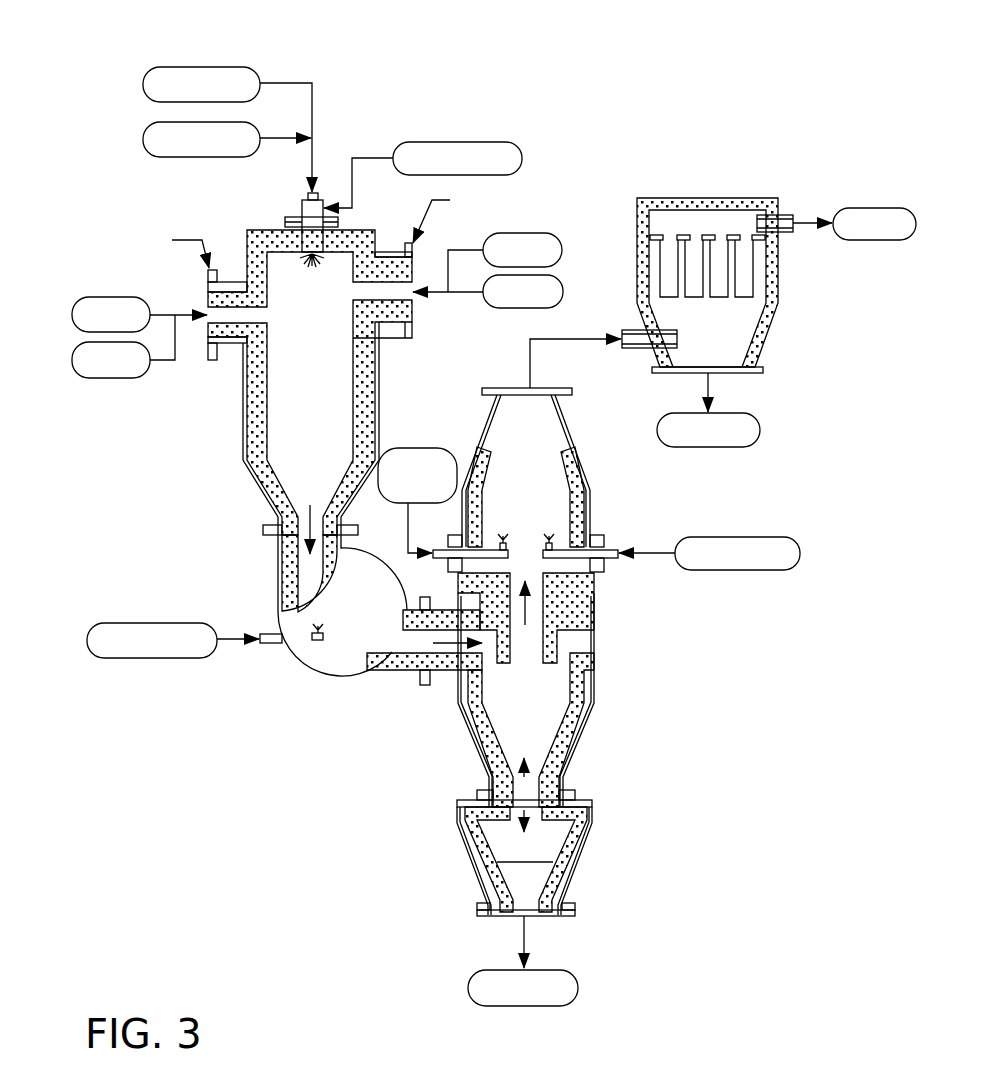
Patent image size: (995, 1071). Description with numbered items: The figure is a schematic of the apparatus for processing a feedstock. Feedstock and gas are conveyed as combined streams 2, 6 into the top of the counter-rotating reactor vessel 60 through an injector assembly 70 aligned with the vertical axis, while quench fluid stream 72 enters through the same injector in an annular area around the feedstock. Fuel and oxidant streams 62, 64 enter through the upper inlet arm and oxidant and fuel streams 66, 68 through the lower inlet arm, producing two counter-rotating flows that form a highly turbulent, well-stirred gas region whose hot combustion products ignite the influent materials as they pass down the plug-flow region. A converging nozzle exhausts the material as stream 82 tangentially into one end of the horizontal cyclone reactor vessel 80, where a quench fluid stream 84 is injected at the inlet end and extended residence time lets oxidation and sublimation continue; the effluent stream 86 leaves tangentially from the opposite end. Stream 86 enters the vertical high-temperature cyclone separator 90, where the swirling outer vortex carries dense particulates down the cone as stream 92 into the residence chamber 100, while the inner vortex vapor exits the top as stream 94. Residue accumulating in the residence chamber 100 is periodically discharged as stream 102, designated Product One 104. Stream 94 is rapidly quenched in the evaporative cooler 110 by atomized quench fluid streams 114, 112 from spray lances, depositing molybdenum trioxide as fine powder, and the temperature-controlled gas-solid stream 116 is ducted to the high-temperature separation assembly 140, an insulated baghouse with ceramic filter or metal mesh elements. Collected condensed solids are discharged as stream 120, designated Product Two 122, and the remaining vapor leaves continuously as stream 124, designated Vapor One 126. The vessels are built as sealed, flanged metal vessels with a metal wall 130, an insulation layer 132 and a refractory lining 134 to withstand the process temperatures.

The feedstock stream 2 is at (170, 67).
The gas stream 6 is at (160, 157).
The counter-rotating reactor vessel 60 is at (327, 348).
The fuel stream 62 is at (527, 233).
The oxidant stream 64 is at (500, 308).
The oxidant stream 66 is at (160, 297).
The fuel stream 68 is at (157, 378).
The injector assembly 70 is at (300, 200).
The quench fluid stream 72 is at (432, 142).
The horizontal cyclone reactor vessel 80 is at (365, 616).
The reactor effluent stream 82 is at (306, 514).
The quench fluid stream 84 is at (156, 623).
The cyclone reactor effluent stream 86 is at (452, 677).
The high-temperature cyclone separator 90 is at (538, 721).
The residue stream 92 is at (529, 795).
The vapor stream 94 is at (529, 616).
The residence chamber 100 is at (524, 861).
The discharged residue stream 102 is at (523, 938).
The Product 1 104 is at (468, 980).
The evaporative cooler 110 is at (548, 498).
The atomized quench fluid stream 112 is at (770, 570).
The atomized quench fluid stream 114 is at (405, 448).
The gas-solid stream 116 is at (545, 339).
The residual fraction stream 120 is at (700, 373).
The Product 2 122 is at (752, 447).
The vapor discharge stream 124 is at (805, 224).
The Vapor 1 126 is at (872, 208).
The metal vessel wall 130 is at (243, 400).
The insulation layer 132 is at (247, 425).
The refractory lining 134 is at (267, 437).
The high-temperature separation assembly 140 is at (737, 345).